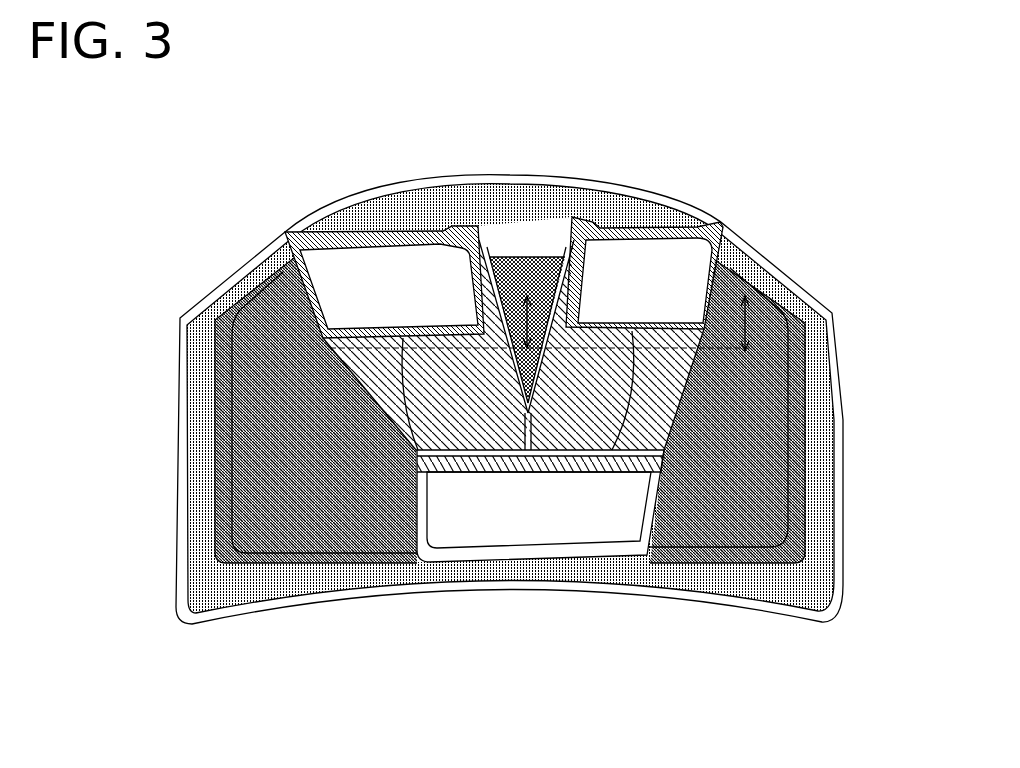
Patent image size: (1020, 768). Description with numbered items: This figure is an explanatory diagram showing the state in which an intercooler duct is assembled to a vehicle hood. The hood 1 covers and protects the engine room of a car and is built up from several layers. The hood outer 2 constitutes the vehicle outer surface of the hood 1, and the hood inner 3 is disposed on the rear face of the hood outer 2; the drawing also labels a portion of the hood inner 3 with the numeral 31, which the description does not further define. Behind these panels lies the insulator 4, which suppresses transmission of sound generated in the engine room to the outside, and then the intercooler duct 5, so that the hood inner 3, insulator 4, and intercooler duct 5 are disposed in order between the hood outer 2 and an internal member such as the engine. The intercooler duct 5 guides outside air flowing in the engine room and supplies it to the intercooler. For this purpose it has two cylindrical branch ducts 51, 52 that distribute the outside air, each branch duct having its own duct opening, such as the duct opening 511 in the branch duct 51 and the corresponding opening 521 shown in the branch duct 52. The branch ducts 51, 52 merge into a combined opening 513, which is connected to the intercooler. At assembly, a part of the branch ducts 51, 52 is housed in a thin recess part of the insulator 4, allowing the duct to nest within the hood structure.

The hood 1 is at (486, 152).
The hood outer 2 is at (763, 257).
The hood inner 3 is at (375, 218).
The outer panel peripheral portion 31 is at (622, 210).
The insulator 4 is at (727, 507).
The intercooler duct 5 is at (506, 384).
The branch duct 51 is at (660, 416).
The branch duct 52 is at (405, 402).
The duct opening 511 is at (653, 265).
The second cavity portion 521 is at (345, 270).
The combined opening 513 is at (540, 561).